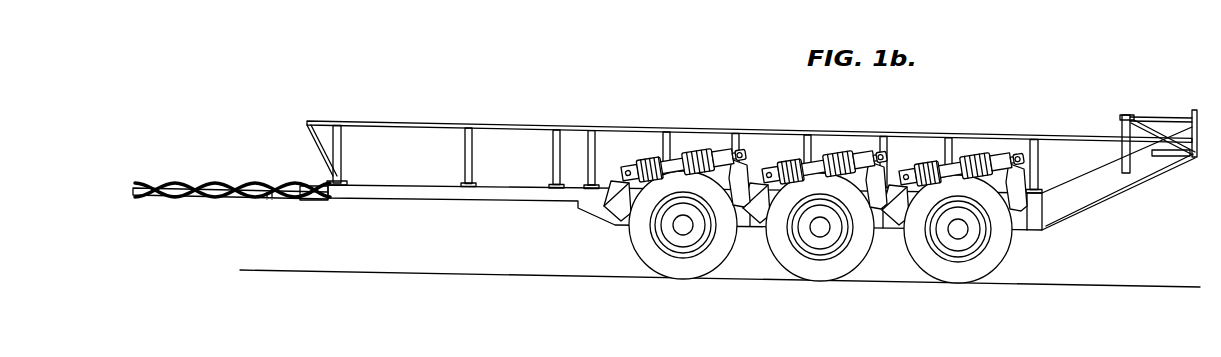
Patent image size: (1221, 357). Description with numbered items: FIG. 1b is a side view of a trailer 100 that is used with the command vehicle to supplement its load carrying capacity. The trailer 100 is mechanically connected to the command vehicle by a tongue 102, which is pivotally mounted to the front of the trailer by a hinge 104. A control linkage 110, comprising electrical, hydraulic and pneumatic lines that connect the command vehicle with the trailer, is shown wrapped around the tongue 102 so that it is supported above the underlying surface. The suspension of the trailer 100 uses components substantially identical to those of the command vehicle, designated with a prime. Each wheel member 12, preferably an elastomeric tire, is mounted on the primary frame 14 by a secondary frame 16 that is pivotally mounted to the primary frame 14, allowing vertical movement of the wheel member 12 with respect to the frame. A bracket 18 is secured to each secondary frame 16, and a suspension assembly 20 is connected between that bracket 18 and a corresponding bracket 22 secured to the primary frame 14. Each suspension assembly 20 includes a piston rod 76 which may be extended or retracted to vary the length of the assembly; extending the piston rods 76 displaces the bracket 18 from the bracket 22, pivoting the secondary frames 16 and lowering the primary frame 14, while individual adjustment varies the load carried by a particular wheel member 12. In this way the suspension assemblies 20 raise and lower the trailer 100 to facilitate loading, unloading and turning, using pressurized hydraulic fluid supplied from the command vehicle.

The trailer 100 is at (1071, 87).
The tongue 102 is at (192, 167).
The hinge 104 is at (338, 200).
The control linkage 110 is at (236, 186).
The wheel member 12 is at (690, 266).
The primary frame 14 is at (1030, 222).
The secondary frame 16 is at (617, 233).
The bracket 18 is at (616, 219).
The suspension assembly 20 is at (657, 146).
The bracket 22 is at (748, 163).
The piston rod 76 is at (732, 150).